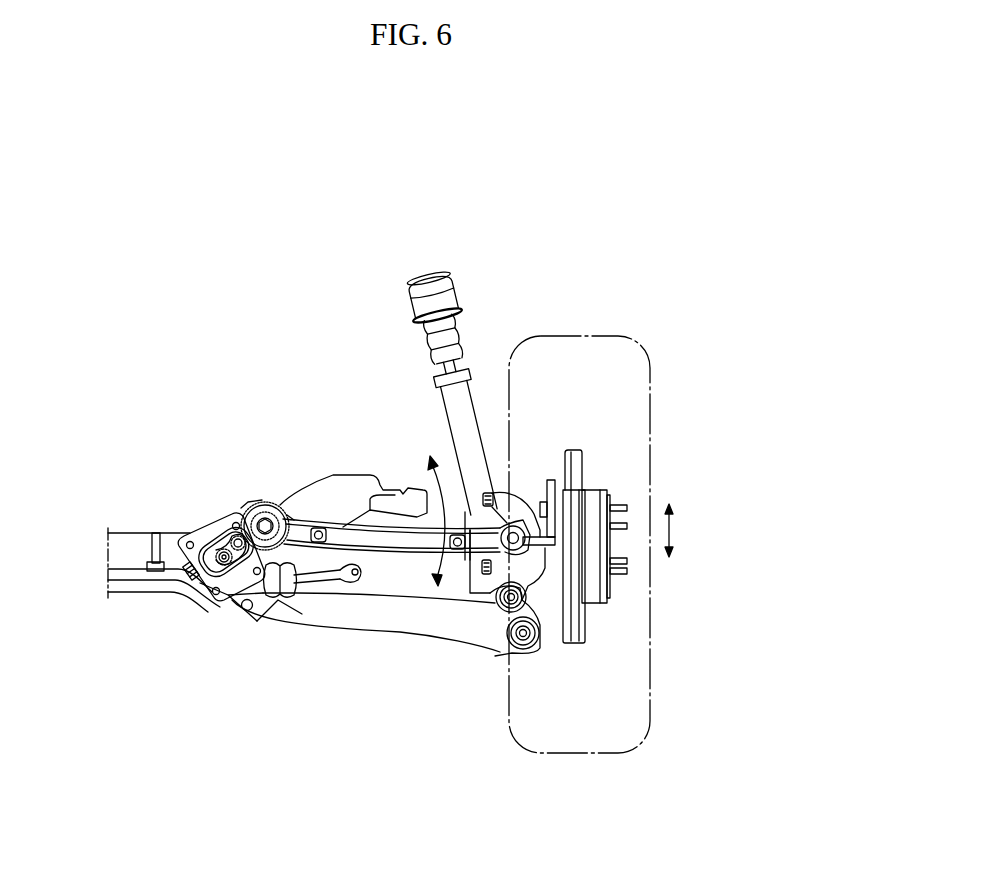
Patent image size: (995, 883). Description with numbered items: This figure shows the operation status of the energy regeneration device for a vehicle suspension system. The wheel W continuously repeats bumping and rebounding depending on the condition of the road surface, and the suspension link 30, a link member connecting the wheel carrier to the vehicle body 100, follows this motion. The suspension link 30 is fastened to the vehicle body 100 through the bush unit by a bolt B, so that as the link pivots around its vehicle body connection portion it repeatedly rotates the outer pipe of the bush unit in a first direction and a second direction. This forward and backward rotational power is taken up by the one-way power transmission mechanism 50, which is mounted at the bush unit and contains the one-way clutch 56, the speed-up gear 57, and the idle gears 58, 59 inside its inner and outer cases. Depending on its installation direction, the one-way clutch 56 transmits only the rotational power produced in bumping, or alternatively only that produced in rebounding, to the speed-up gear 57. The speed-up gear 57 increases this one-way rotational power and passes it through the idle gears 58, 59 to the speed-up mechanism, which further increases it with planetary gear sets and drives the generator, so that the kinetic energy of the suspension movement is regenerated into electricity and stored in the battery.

The suspension link 30 is at (398, 540).
The one-way power transmission mechanism 50 is at (200, 589).
The one-way clutch 56 is at (261, 568).
The speed-up gear 57 is at (212, 532).
The idle gear 58 is at (226, 530).
The idle gear 59 is at (258, 517).
The bolt B is at (266, 524).
The vehicle body 100 is at (330, 503).
The wheel W is at (605, 346).